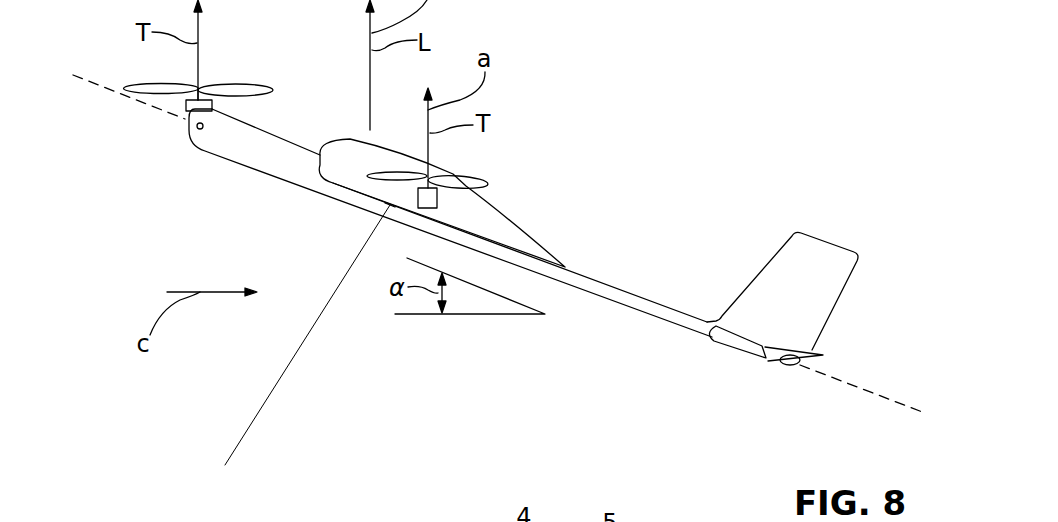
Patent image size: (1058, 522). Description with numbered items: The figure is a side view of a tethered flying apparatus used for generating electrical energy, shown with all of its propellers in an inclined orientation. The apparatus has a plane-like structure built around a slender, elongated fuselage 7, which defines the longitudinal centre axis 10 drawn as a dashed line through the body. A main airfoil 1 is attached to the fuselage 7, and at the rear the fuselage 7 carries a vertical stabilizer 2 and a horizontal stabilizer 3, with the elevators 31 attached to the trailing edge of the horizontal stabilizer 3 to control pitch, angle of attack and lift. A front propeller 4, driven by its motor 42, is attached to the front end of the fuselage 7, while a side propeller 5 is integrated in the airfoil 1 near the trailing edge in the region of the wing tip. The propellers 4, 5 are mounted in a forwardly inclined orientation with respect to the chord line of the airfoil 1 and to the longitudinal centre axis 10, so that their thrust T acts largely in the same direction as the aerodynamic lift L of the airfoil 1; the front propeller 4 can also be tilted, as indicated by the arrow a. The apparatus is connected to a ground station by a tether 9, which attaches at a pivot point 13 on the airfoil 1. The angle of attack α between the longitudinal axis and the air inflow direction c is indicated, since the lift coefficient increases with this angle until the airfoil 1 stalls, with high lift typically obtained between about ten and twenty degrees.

The main airfoil 1 is at (508, 237).
The vertical stabilizer 2 is at (827, 250).
The horizontal stabilizer 3 is at (732, 343).
The front propeller 4 is at (245, 93).
The side propeller 5 is at (482, 175).
The fuselage 7 is at (648, 307).
The tether 9 is at (277, 383).
The longitudinal centre axis 10 is at (842, 382).
The pivot point 13 is at (390, 205).
The elevator 31 is at (785, 362).
The motor 42 is at (193, 117).